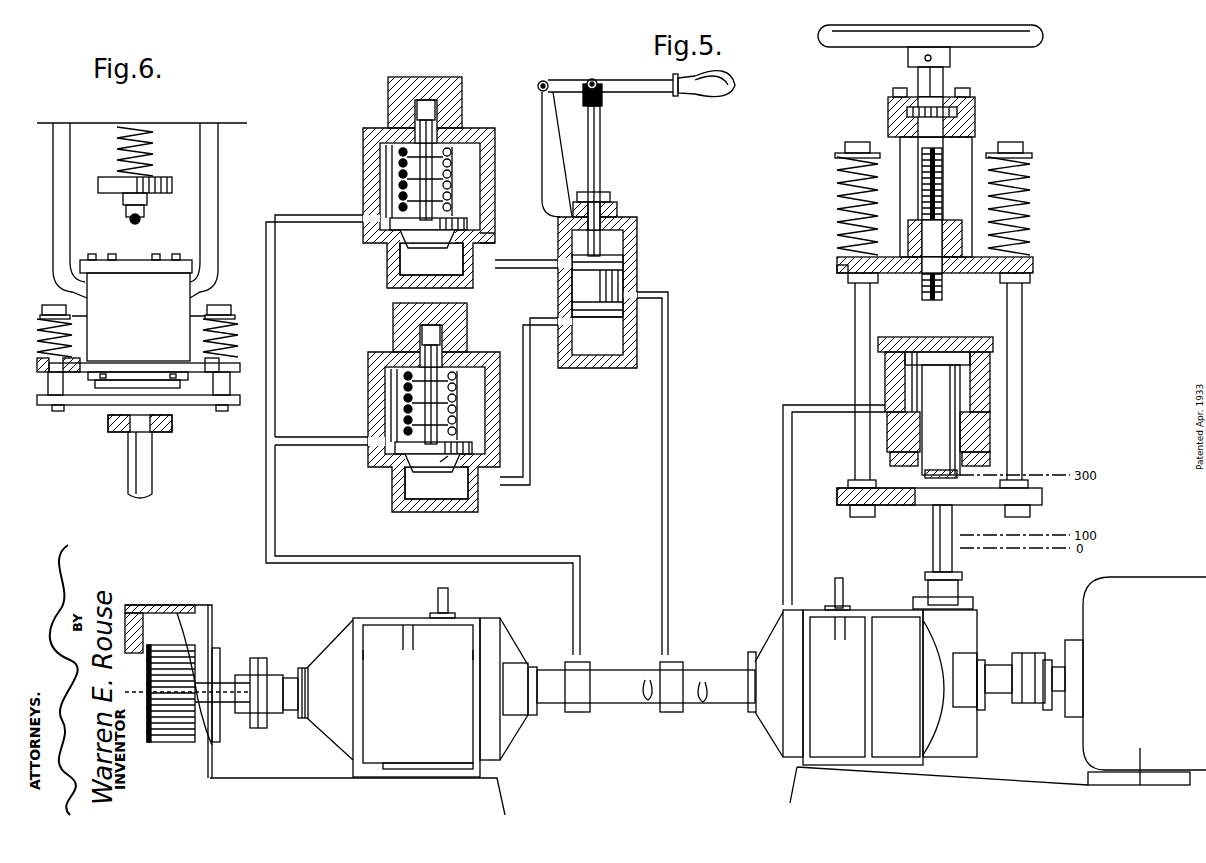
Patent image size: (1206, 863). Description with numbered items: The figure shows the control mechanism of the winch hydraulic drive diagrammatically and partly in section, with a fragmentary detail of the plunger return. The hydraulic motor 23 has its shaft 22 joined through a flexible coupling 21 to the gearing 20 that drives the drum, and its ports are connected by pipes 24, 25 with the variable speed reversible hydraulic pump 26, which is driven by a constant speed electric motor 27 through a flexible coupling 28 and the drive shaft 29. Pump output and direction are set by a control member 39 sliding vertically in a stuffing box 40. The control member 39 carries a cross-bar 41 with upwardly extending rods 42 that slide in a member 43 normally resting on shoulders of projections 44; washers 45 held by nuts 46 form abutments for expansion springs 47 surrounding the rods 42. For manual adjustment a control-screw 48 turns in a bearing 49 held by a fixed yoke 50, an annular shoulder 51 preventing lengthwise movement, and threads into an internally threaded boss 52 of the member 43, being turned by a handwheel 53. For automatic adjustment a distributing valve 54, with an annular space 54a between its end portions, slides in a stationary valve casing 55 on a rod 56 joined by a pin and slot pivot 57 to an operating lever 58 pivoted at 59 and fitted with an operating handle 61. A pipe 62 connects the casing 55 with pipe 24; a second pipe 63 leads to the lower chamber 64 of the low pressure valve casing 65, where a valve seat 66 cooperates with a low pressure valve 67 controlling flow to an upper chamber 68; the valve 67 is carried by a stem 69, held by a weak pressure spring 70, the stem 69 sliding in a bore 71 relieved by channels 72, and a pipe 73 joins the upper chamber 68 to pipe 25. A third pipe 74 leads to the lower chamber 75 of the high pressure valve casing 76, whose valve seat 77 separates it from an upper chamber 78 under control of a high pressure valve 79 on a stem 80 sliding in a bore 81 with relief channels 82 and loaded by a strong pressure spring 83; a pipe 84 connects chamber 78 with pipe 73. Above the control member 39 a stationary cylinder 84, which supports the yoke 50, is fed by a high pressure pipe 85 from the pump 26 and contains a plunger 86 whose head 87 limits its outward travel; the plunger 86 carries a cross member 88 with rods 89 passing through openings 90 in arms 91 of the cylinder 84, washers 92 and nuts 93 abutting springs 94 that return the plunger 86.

In FIG. 5, the gearing 20 is at (170, 730).
In FIG. 5, the flexible coupling 21 is at (258, 658).
In FIG. 5, the shaft 22 is at (285, 686).
In FIG. 5, the hydraulic motor 23 is at (445, 682).
In FIG. 5, the pipe 24 is at (698, 672).
In FIG. 5, the pipe 25 is at (616, 690).
In FIG. 5, the variable speed reversible hydraulic pump 26 is at (921, 690).
In FIG. 5, the electric motor 27 is at (1135, 681).
In FIG. 5, the flexible coupling 28 is at (1030, 705).
In FIG. 5, the drive shaft 29 is at (1005, 665).
In FIG. 6, the control member 39 is at (150, 494).
In FIG. 5, the control member 39 is at (933, 555).
In FIG. 5, the stuffing box 40 is at (962, 590).
In FIG. 6, the cross-bar 41 is at (172, 420).
In FIG. 5, the cross-bar 41 is at (845, 505).
In FIG. 6, the rods 42 is at (147, 218).
In FIG. 5, the rods 42 is at (855, 345).
In FIG. 6, the member 43 is at (172, 186).
In FIG. 5, the member 43 is at (836, 268).
In FIG. 6, the projections 44 is at (125, 200).
In FIG. 5, the projections 44 is at (845, 284).
In FIG. 5, the washers 45 is at (838, 158).
In FIG. 5, the nuts 46 is at (848, 148).
In FIG. 6, the expansion springs 47 is at (150, 134).
In FIG. 5, the expansion springs 47 is at (838, 212).
In FIG. 5, the control-screw 48 is at (918, 80).
In FIG. 5, the bearing 49 is at (888, 118).
In FIG. 6, the fixed yoke 50 is at (53, 215).
In FIG. 5, the fixed yoke 50 is at (965, 150).
In FIG. 5, the annular shoulder 51 is at (975, 105).
In FIG. 5, the internally threaded boss 52 is at (955, 240).
In FIG. 5, the handwheel 53 is at (1043, 38).
In FIG. 5, the distributing valve 54 is at (593, 312).
In FIG. 5, the annular space 54a is at (622, 283).
In FIG. 5, the stationary valve casing 55 is at (612, 368).
In FIG. 5, the rod 56 is at (600, 155).
In FIG. 5, the pin and slot pivot 57 is at (600, 102).
In FIG. 5, the operating lever 58 is at (636, 80).
In FIG. 5, the pivot 59 is at (543, 80).
In FIG. 5, the operating handle 61 is at (712, 90).
In FIG. 5, the pipe 62 is at (663, 495).
In FIG. 5, the second pipe 63 is at (518, 270).
In FIG. 5, the lower chamber 64 is at (388, 282).
In FIG. 5, the low pressure valve casing 65 is at (363, 170).
In FIG. 5, the valve seat 66 is at (392, 248).
In FIG. 5, the low pressure valve 67 is at (495, 240).
In FIG. 5, the upper chamber 68 is at (470, 178).
In FIG. 5, the stem 69 is at (422, 190).
In FIG. 5, the pressure spring 70 is at (452, 200).
In FIG. 5, the bore 71 is at (425, 100).
In FIG. 5, the channels 72 is at (392, 125).
In FIG. 5, the pipe 73 is at (274, 233).
In FIG. 5, the third pipe 74 is at (531, 457).
In FIG. 5, the lower chamber 75 is at (428, 499).
In FIG. 5, the high pressure valve casing 76 is at (368, 392).
In FIG. 5, the valve seat 77 is at (400, 470).
In FIG. 5, the upper chamber 78 is at (468, 402).
In FIG. 5, the high pressure valve 79 is at (440, 466).
In FIG. 5, the stem 80 is at (430, 410).
In FIG. 5, the bore 81 is at (397, 340).
In FIG. 5, the relief channels 82 is at (466, 330).
In FIG. 5, the pressure spring 83 is at (457, 420).
In FIG. 6, the stationary cylinder 84 is at (136, 307).
In FIG. 5, the stationary cylinder 84 is at (990, 390).
In FIG. 5, the high pressure pipe 85 is at (783, 512).
In FIG. 6, the plunger 86 is at (135, 386).
In FIG. 5, the plunger 86 is at (945, 424).
In FIG. 5, the head 87 is at (925, 378).
In FIG. 6, the cross member 88 is at (80, 405).
In FIG. 6, the rods 89 is at (52, 380).
In FIG. 6, the openings 90 is at (80, 370).
In FIG. 6, the arms 91 is at (240, 368).
In FIG. 6, the washers 92 is at (74, 318).
In FIG. 6, the nuts 93 is at (50, 305).
In FIG. 6, the springs 94 is at (72, 338).